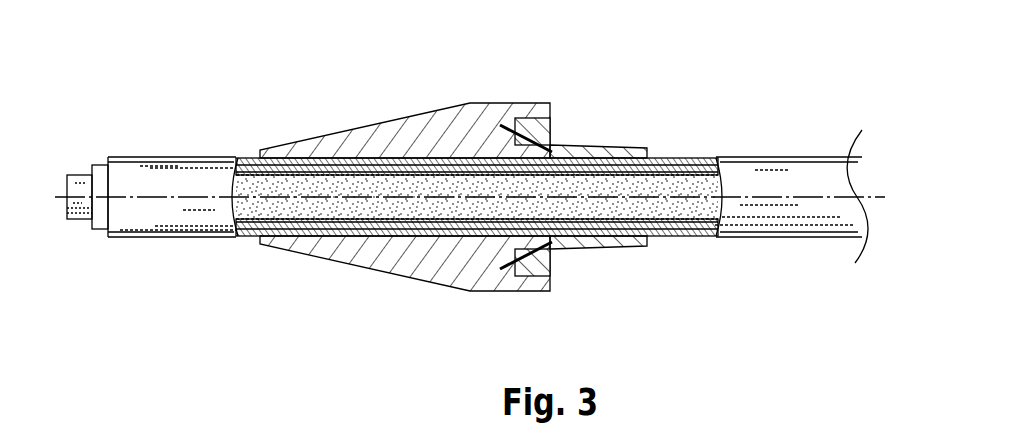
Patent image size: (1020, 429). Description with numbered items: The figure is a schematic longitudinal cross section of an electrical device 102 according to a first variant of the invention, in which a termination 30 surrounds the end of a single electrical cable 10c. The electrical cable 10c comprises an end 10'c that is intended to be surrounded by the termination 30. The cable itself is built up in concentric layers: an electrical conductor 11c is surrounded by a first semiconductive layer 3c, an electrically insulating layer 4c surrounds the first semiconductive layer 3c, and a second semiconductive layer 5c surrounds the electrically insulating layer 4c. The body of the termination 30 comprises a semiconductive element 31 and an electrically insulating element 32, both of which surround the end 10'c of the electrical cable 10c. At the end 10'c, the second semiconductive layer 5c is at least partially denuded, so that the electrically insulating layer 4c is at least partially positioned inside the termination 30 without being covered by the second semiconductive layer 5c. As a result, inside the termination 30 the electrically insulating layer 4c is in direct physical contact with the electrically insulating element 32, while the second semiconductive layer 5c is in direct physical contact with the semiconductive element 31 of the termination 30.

The device 102 is at (190, 327).
The electrical cable 10c is at (772, 135).
The end of the electrical cable 10'c is at (477, 144).
The first semiconductive layer 3c is at (243, 160).
The electrically insulating layer 4c is at (163, 182).
The second semiconductive layer 5c is at (697, 157).
The electrical conductor 11c is at (75, 217).
The termination 30 is at (413, 290).
The semiconductive element 31 is at (527, 127).
The electrically insulating element 32 is at (447, 130).